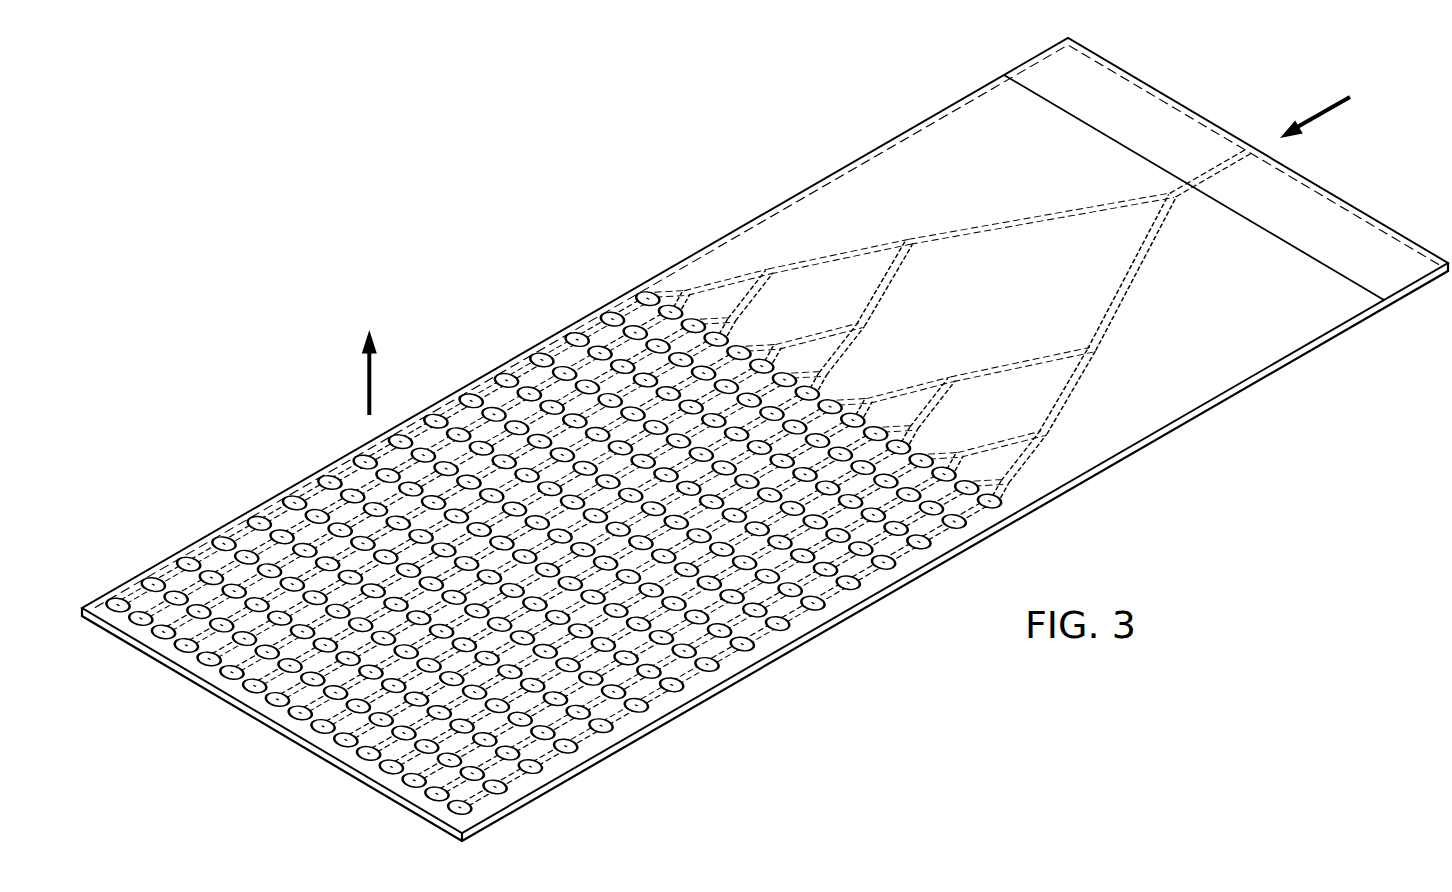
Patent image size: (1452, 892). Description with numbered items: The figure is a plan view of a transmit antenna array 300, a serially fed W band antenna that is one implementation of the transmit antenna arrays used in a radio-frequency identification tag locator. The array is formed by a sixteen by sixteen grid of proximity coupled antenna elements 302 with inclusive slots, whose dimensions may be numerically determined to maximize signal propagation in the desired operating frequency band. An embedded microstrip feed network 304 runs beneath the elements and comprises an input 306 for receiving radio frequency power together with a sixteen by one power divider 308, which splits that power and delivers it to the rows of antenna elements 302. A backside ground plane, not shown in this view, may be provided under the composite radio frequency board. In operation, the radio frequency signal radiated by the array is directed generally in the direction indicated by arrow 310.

The transmit antenna array 300 is at (730, 178).
The antenna elements 302 is at (722, 672).
The embedded microstrip feed network 304 is at (669, 290).
The input 306 is at (1320, 110).
The power divider 308 is at (1183, 228).
The arrow 310 is at (367, 380).